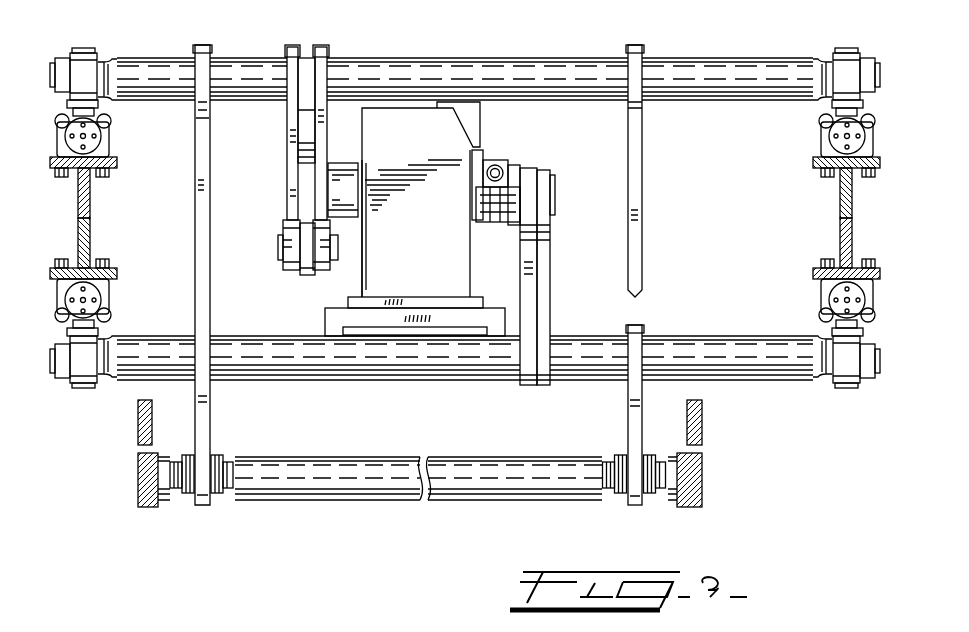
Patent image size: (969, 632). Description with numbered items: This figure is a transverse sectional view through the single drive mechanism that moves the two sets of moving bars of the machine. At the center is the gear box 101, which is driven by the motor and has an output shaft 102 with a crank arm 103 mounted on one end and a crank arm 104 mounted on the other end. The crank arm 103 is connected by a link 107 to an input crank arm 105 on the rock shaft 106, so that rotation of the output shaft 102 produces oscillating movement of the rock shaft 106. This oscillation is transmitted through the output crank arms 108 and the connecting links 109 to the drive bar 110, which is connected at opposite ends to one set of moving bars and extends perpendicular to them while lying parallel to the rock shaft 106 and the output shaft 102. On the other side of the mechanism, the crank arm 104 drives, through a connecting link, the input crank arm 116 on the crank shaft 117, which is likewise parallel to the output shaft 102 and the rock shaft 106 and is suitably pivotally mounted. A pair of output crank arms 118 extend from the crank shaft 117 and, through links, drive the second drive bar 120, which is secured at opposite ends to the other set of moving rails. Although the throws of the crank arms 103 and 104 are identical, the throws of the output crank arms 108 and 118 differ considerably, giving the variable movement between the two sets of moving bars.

The gear box 101 is at (423, 113).
The output shaft 102 is at (360, 178).
The crank arm 103 is at (492, 213).
The crank arm 104 is at (350, 158).
The input crank arm 105 is at (545, 287).
The rock shaft 106 is at (702, 345).
The link 107 is at (528, 238).
The output crank arms 108 is at (237, 410).
The connecting links 109 is at (217, 490).
The drive bar 110 is at (482, 478).
The input crank arm 116 is at (303, 22).
The crank shaft 117 is at (143, 72).
The output crank arms 118 is at (205, 190).
The drive bar 120 is at (328, 478).